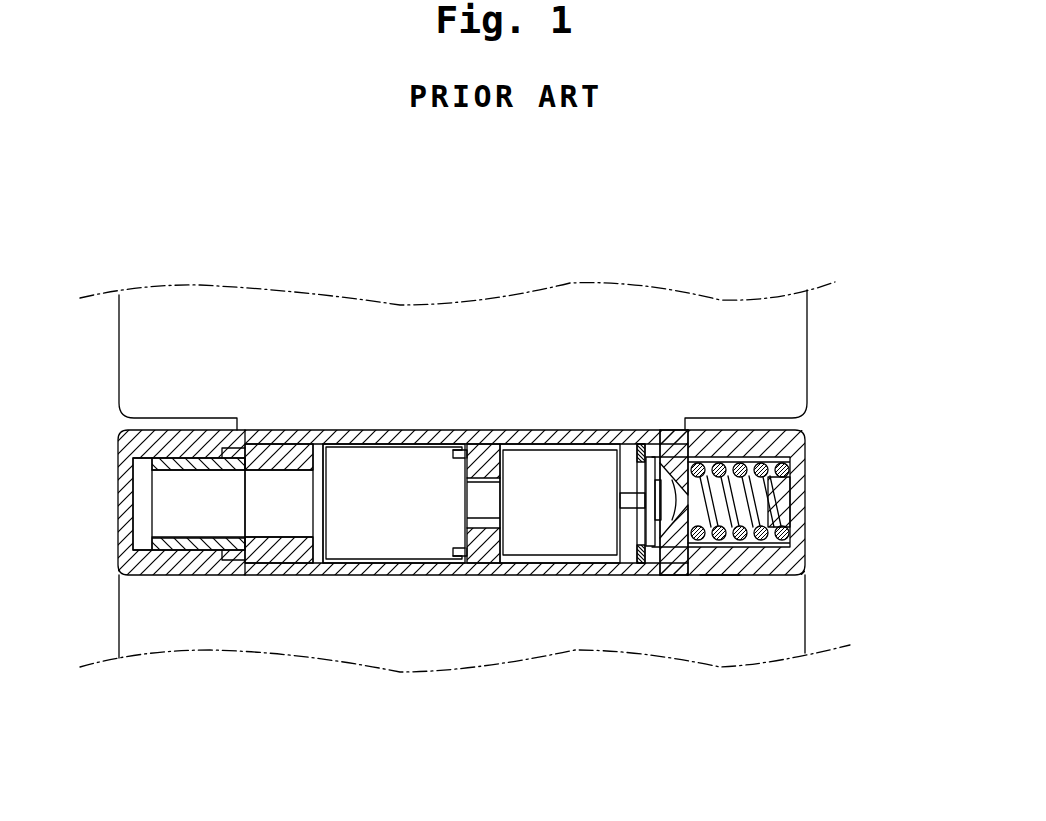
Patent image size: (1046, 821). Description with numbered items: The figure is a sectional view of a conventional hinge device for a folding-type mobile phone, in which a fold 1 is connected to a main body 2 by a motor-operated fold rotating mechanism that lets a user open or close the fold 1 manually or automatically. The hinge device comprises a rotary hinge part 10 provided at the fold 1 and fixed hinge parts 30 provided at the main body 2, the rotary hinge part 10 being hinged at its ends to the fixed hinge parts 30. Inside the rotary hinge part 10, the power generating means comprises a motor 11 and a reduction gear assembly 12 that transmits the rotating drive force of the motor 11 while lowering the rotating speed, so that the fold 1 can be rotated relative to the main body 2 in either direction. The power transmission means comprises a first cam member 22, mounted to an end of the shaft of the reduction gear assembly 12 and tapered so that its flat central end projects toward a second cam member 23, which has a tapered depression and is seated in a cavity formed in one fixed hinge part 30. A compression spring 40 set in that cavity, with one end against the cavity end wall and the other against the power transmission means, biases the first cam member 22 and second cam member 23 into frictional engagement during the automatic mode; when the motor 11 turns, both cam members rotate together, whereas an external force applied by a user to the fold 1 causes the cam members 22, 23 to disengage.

The fold 1 is at (471, 320).
The main body 2 is at (280, 645).
The rotary hinge part 10 is at (666, 428).
The motor 11 is at (375, 545).
The reduction gear assembly 12 is at (525, 540).
The first cam member 22 is at (675, 533).
The second cam member 23 is at (720, 573).
The fixed hinge part 30 is at (805, 545).
The compression spring 40 is at (805, 465).